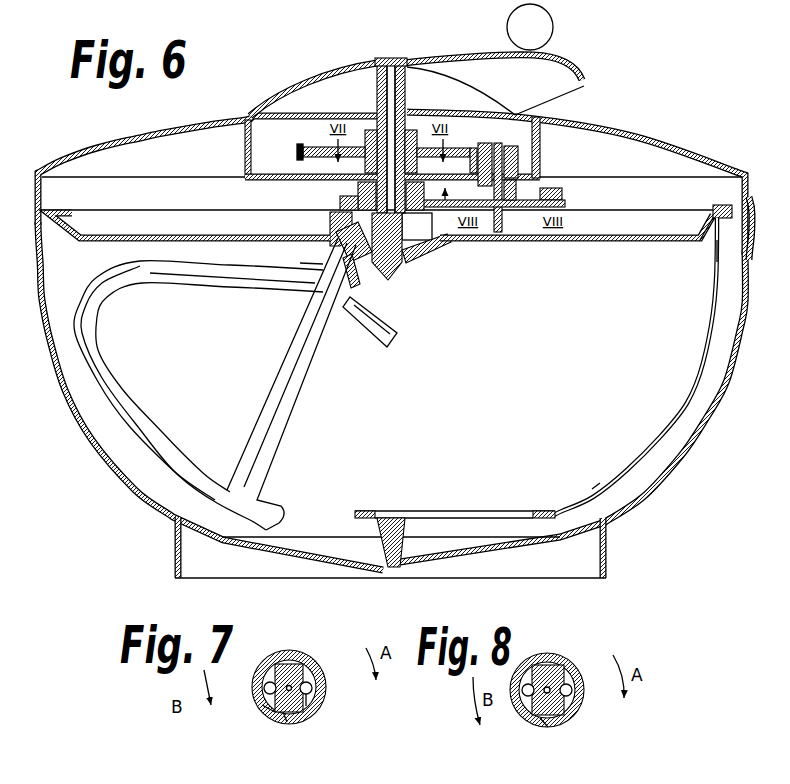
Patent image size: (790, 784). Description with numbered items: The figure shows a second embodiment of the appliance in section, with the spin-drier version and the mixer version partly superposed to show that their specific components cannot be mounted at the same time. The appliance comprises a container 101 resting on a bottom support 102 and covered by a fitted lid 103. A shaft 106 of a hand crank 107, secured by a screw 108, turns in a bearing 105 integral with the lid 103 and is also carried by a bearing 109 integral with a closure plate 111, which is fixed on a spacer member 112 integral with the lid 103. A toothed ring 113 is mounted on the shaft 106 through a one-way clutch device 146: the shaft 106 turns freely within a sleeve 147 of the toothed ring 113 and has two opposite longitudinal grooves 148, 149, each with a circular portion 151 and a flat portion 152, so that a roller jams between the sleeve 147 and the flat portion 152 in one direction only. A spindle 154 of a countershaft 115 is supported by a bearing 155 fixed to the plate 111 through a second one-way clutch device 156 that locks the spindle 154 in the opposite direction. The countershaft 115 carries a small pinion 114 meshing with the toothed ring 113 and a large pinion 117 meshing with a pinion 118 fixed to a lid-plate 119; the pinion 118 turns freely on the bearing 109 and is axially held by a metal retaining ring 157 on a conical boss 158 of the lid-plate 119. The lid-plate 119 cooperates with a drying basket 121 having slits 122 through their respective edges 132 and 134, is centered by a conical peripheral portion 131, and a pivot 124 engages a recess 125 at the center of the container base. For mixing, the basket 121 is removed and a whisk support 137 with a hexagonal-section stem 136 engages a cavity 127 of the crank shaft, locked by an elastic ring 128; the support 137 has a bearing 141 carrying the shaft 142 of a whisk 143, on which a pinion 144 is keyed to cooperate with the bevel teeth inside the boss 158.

In FIG. 6, the container 101 is at (648, 496).
In FIG. 6, the bottom support 102 is at (606, 560).
In FIG. 6, the lid 103 is at (666, 139).
In FIG. 6, the bearing 105 is at (408, 94).
In FIG. 6, the shaft 106 is at (405, 63).
In FIG. 7, the shaft 106 is at (286, 723).
In FIG. 6, the hand crank 107 is at (483, 55).
In FIG. 6, the screw 108 is at (392, 63).
In FIG. 6, the bearing 109 is at (420, 226).
In FIG. 6, the closure plate 111 is at (298, 153).
In FIG. 6, the spacer member 112 is at (247, 157).
In FIG. 6, the toothed ring 113 is at (303, 150).
In FIG. 7, the toothed ring 113 is at (330, 700).
In FIG. 6, the small pinion 114 is at (535, 132).
In FIG. 6, the countershaft 115 is at (514, 214).
In FIG. 6, the large pinion 117 is at (566, 195).
In FIG. 6, the pinion 118 is at (332, 210).
In FIG. 6, the lid-plate 119 is at (652, 252).
In FIG. 6, the drying basket 121 is at (598, 478).
In FIG. 6, the slits 122 is at (664, 413).
In FIG. 6, the pivot 124 is at (402, 525).
In FIG. 6, the recess 125 is at (398, 572).
In FIG. 6, the cavity 127 is at (340, 200).
In FIG. 6, the elastic ring 128 is at (403, 278).
In FIG. 6, the conical peripheral portion 131 is at (705, 221).
In FIG. 6, the edge 132 is at (719, 205).
In FIG. 6, the edge 134 is at (715, 246).
In FIG. 6, the hexagonal-section stem 136 is at (358, 191).
In FIG. 6, the whisk support 137 is at (414, 303).
In FIG. 6, the bearing 141 is at (342, 243).
In FIG. 6, the shaft 142 is at (356, 283).
In FIG. 6, the whisk 143 is at (302, 421).
In FIG. 6, the pinion 144 is at (397, 278).
In FIG. 6, the one-way clutch device 146 is at (367, 130).
In FIG. 7, the one-way clutch device 146 is at (262, 727).
In FIG. 7, the sleeve 147 is at (313, 663).
In FIG. 7, the longitudinal groove 148 is at (264, 690).
In FIG. 7, the longitudinal groove 149 is at (318, 710).
In FIG. 7, the circular portion 151 is at (268, 698).
In FIG. 7, the flat portion 152 is at (268, 668).
In FIG. 6, the spindle 154 is at (497, 228).
In FIG. 8, the spindle 154 is at (562, 665).
In FIG. 6, the bearing 155 is at (540, 174).
In FIG. 8, the bearing 155 is at (572, 712).
In FIG. 6, the second one-way clutch device 156 is at (526, 163).
In FIG. 8, the second one-way clutch device 156 is at (540, 730).
In FIG. 6, the metal retaining ring 157 is at (432, 176).
In FIG. 6, the conical boss 158 is at (300, 246).